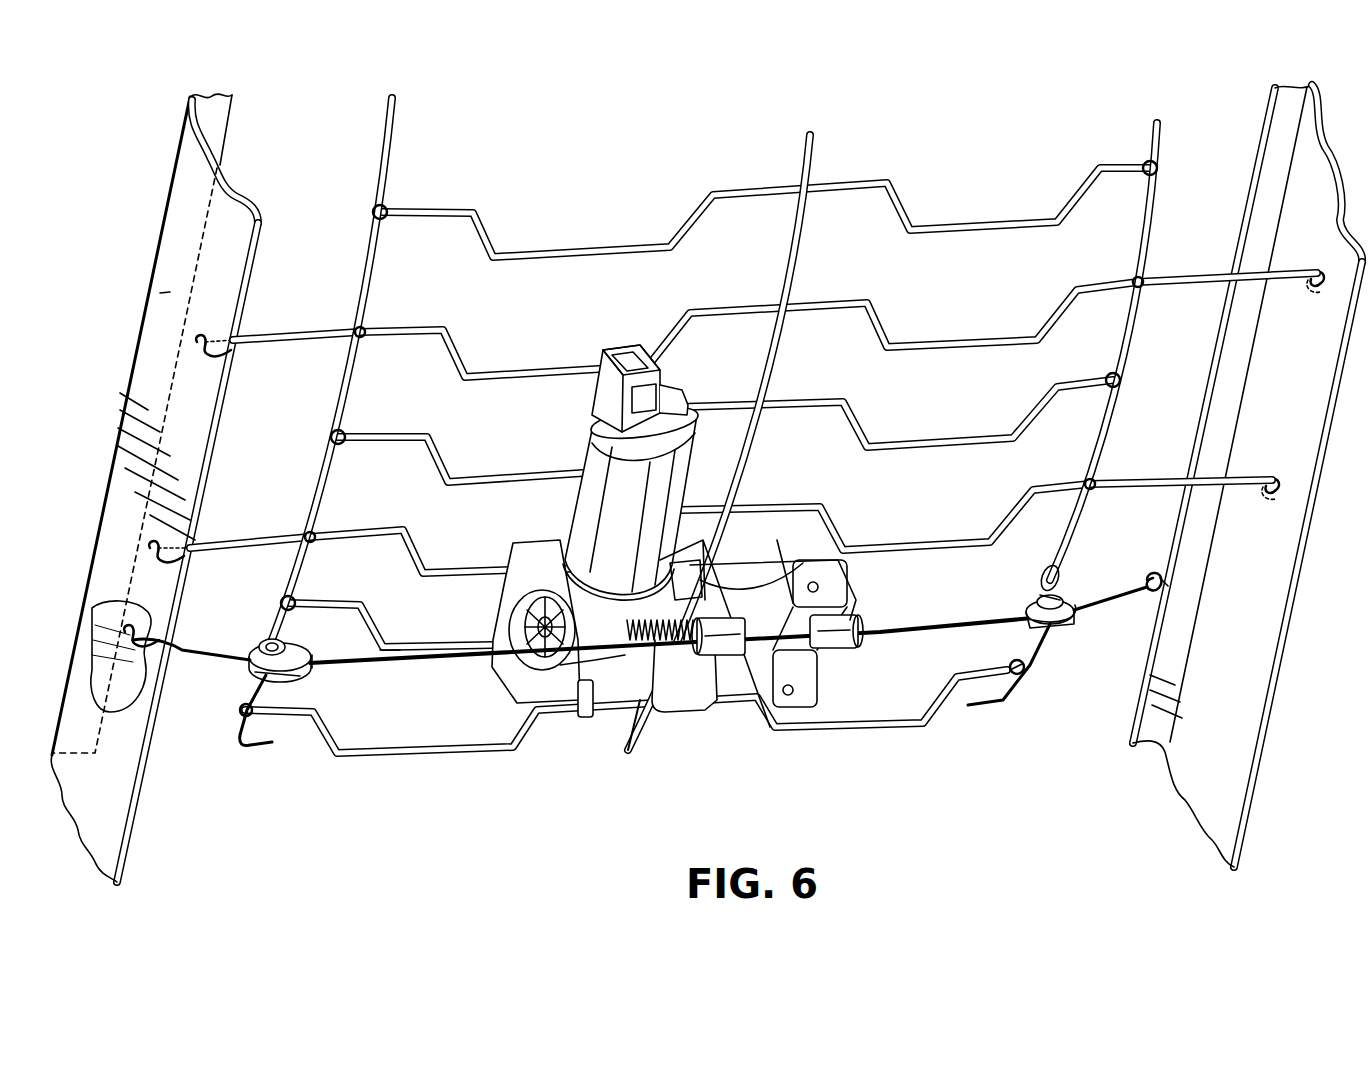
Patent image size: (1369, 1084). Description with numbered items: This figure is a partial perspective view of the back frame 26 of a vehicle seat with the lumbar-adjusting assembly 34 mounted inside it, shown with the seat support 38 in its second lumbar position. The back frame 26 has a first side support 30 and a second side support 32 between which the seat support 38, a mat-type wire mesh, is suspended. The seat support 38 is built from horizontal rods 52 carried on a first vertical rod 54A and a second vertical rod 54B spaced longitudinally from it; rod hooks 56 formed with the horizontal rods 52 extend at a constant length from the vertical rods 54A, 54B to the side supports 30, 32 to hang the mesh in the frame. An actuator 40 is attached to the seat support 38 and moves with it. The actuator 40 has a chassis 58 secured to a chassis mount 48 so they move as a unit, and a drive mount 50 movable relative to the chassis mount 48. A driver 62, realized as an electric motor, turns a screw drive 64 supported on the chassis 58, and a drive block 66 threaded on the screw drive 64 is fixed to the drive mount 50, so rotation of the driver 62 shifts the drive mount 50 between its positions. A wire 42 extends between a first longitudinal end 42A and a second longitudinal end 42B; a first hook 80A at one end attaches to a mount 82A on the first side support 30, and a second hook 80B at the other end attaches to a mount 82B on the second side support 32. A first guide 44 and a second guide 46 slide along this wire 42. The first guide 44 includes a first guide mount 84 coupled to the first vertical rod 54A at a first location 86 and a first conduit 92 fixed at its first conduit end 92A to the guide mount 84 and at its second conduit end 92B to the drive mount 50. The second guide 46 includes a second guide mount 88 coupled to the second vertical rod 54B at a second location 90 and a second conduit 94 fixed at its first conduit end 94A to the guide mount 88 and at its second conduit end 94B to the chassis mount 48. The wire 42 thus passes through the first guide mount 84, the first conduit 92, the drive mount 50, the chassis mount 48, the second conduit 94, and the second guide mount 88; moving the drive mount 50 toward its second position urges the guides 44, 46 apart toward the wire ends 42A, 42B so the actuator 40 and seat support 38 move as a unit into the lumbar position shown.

The back frame 26 is at (183, 218).
The first side support 30 is at (163, 293).
The second side support 32 is at (1287, 400).
The assembly 34 is at (652, 160).
The seat support 38 is at (1020, 662).
The actuator 40 is at (630, 692).
The wire 42 is at (752, 662).
The first longitudinal end 42A is at (186, 647).
The second longitudinal end 42B is at (1072, 592).
The first guide 44 is at (312, 655).
The second guide 46 is at (1016, 612).
The chassis mount 48 is at (835, 627).
The drive mount 50 is at (803, 563).
The horizontal rods 52 is at (556, 250).
The first vertical rod 54A is at (393, 145).
The second vertical rod 54B is at (1148, 215).
The rod hooks 56 is at (250, 335).
The chassis 58 is at (695, 545).
The driver 62 is at (631, 472).
The screw drive 64 is at (720, 615).
The drive block 66 is at (712, 622).
The first hook 80A is at (118, 700).
The second hook 80B is at (1167, 586).
The mount 82A is at (128, 632).
The mount 82B is at (1160, 570).
The first guide mount 84 is at (265, 684).
The first location 86 is at (268, 645).
The second guide mount 88 is at (1052, 627).
The second location 90 is at (1066, 600).
The first conduit 92 is at (390, 660).
The first conduit end 92A is at (322, 732).
The second conduit end 92B is at (666, 712).
The second conduit 94 is at (920, 627).
The first conduit end 94A is at (1012, 672).
The second conduit end 94B is at (852, 708).